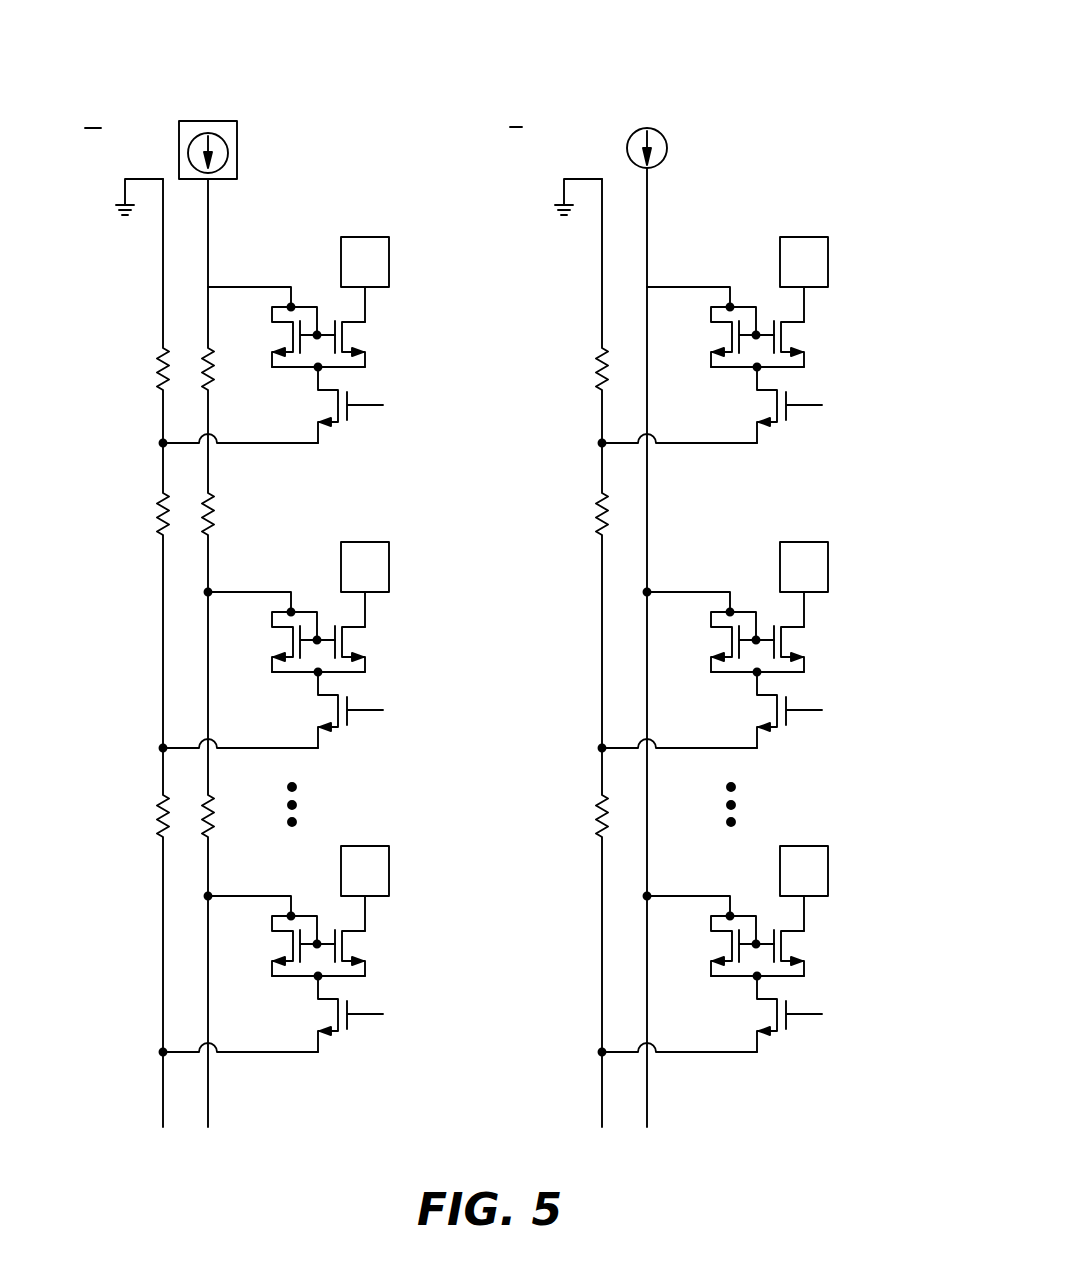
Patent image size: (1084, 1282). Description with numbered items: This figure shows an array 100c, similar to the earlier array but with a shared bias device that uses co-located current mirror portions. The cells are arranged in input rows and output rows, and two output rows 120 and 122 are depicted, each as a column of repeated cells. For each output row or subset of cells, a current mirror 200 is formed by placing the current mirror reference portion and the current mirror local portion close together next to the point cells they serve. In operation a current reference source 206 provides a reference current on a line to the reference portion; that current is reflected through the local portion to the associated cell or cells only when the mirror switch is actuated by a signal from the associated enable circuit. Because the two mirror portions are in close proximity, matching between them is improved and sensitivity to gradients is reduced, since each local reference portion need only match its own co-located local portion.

The array 100c is at (702, 28).
The output row 120 is at (369, 98).
The output row 122 is at (783, 96).
The current mirror 200 is at (307, 292).
The current reference source 206 is at (239, 131).